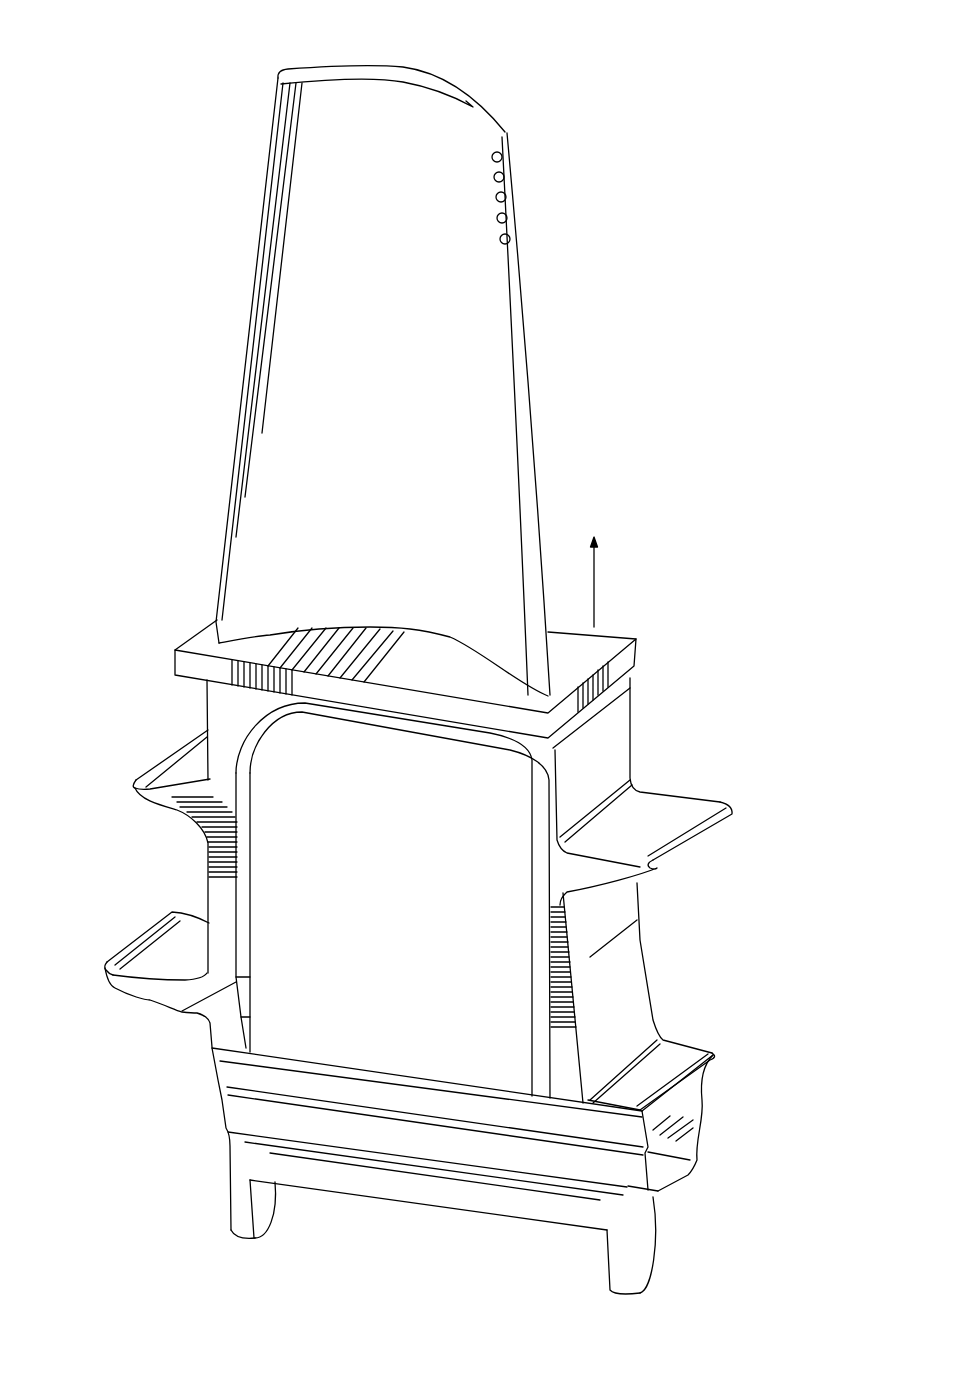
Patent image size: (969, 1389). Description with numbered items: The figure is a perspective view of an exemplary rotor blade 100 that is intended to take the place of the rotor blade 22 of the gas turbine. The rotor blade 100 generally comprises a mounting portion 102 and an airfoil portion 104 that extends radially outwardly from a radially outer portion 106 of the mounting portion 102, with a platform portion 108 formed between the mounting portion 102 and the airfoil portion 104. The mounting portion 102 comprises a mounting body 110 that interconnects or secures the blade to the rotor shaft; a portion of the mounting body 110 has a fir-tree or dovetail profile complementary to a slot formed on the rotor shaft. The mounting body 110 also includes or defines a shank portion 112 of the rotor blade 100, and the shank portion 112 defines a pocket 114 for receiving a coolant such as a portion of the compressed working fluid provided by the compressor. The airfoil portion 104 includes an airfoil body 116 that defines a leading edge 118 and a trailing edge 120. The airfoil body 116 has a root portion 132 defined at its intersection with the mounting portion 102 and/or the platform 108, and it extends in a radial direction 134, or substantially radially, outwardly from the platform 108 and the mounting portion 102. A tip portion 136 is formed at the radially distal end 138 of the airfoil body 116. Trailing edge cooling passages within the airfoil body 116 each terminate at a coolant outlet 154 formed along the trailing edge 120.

The rotor blade 100 is at (183, 190).
The rotor blade 22 is at (140, 157).
The airfoil portion 104 is at (185, 370).
The mounting portion 102 is at (203, 1107).
The radially outer portion 106 is at (414, 718).
The platform portion 108 is at (218, 672).
The mounting body 110 is at (683, 1108).
The shank portion 112 is at (603, 950).
The pocket 114 is at (444, 924).
The airfoil body 116 is at (455, 240).
The leading edge 118 is at (253, 302).
The trailing edge 120 is at (530, 362).
The root portion 132 is at (440, 628).
The radial direction 134 is at (594, 590).
The tip portion 136 is at (462, 100).
The radially distal end 138 is at (496, 111).
The coolant outlet 154 is at (522, 152).